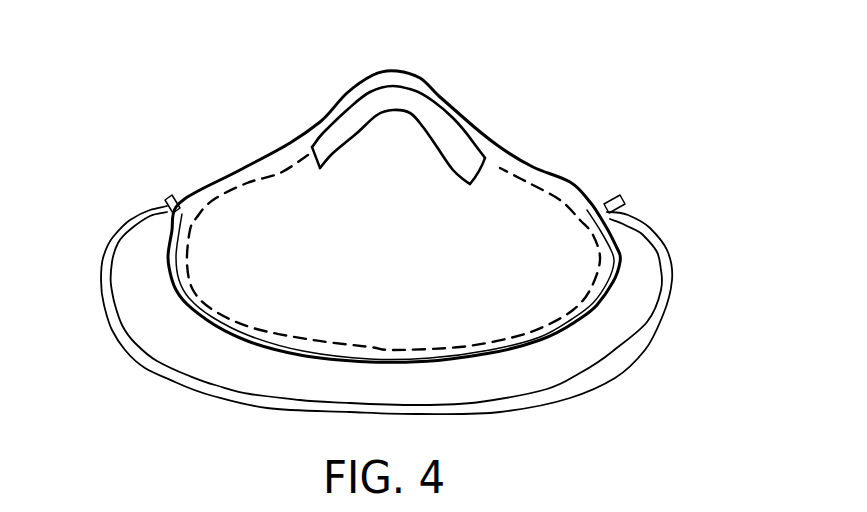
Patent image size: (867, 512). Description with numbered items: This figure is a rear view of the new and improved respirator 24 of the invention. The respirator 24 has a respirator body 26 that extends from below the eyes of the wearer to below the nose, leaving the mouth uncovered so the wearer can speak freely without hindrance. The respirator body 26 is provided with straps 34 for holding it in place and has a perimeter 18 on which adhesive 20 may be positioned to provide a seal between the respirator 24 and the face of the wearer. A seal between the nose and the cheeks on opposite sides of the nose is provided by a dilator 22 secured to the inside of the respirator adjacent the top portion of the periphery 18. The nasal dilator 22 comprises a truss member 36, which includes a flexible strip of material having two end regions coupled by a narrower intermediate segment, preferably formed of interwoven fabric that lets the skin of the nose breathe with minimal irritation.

The respirator 24 is at (238, 150).
The adhesive 20 is at (425, 113).
The dilator 22 is at (333, 132).
The respirator body 26 is at (510, 198).
The straps 34 is at (140, 218).
The perimeter 18 is at (587, 197).
The truss member 36 is at (480, 127).